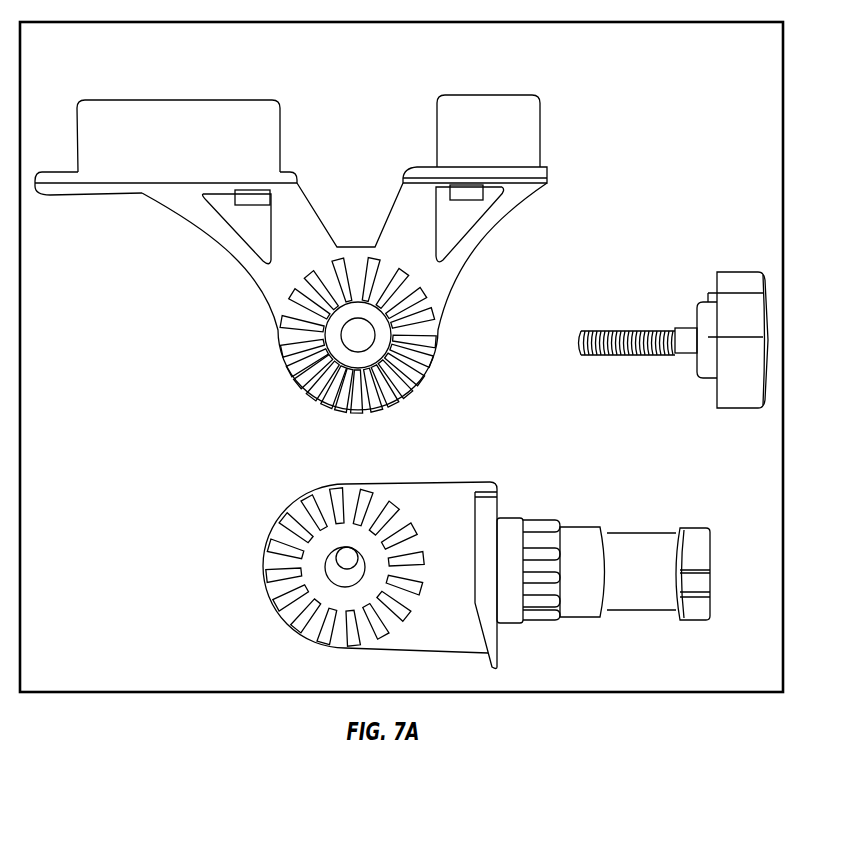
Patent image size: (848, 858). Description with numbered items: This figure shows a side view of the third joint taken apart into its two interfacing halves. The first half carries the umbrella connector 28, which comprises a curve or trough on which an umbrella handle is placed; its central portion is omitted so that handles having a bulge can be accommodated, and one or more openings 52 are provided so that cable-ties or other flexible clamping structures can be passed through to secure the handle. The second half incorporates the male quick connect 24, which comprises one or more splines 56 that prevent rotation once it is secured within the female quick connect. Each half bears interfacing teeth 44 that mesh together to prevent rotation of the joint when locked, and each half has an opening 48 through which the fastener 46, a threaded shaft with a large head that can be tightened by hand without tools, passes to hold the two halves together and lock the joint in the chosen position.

The male quick connect 24 is at (632, 538).
The umbrella connector 28 is at (200, 113).
The interfacing teeth 44 is at (420, 373).
The fastener 46 is at (735, 272).
The openings 48 is at (353, 340).
The openings 52 is at (235, 198).
The splines 56 is at (542, 528).